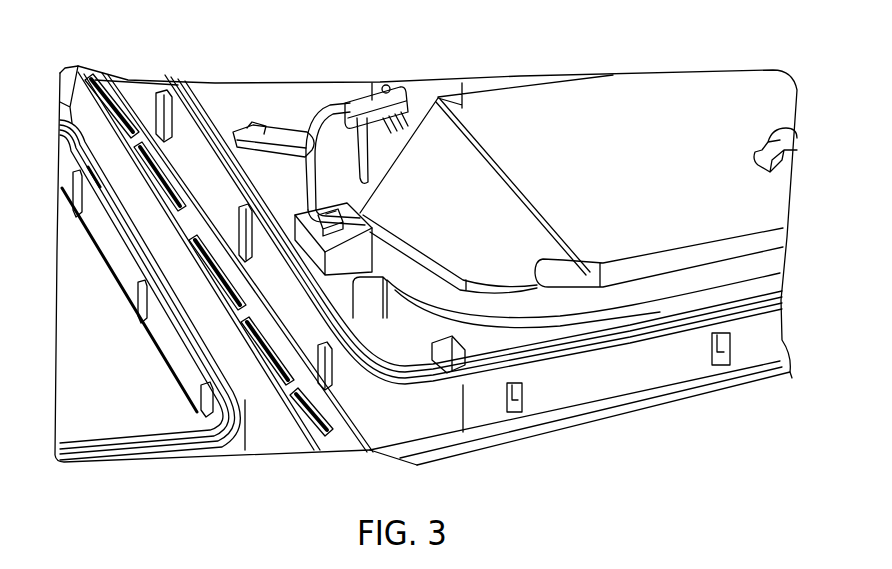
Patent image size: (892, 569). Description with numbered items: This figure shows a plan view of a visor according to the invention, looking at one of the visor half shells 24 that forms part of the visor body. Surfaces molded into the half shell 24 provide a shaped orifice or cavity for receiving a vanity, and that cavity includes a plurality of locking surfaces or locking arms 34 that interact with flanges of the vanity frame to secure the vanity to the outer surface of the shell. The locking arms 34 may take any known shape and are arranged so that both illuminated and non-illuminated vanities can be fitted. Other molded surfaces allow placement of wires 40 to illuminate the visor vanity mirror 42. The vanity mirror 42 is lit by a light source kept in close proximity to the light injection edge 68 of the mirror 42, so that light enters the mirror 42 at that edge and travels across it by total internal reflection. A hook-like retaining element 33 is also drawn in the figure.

The visor half shell 24 is at (223, 97).
The hook bracket 33 is at (323, 120).
The locking arms 34 is at (370, 105).
The wires 40 is at (300, 215).
The visor vanity mirror 42 is at (577, 97).
The light injection edge 68 is at (367, 217).